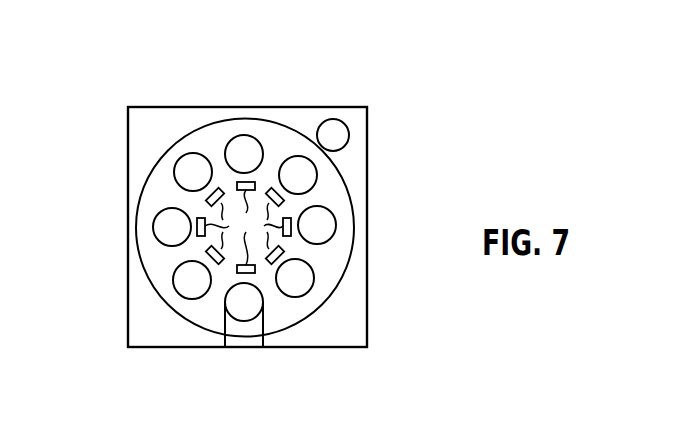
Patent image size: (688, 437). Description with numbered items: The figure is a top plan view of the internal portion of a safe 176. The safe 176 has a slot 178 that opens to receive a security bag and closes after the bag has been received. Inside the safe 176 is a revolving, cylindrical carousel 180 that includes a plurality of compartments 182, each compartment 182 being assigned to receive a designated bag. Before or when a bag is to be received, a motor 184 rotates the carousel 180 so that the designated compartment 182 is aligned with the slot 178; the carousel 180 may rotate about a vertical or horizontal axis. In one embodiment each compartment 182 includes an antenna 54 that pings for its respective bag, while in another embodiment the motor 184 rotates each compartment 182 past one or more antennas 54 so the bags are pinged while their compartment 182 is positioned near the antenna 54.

The safe 176 is at (387, 132).
The carousel 180 is at (120, 180).
The compartment 182 is at (186, 163).
The motor 184 is at (330, 132).
The slot 178 is at (255, 348).
The antenna 54 is at (244, 227).